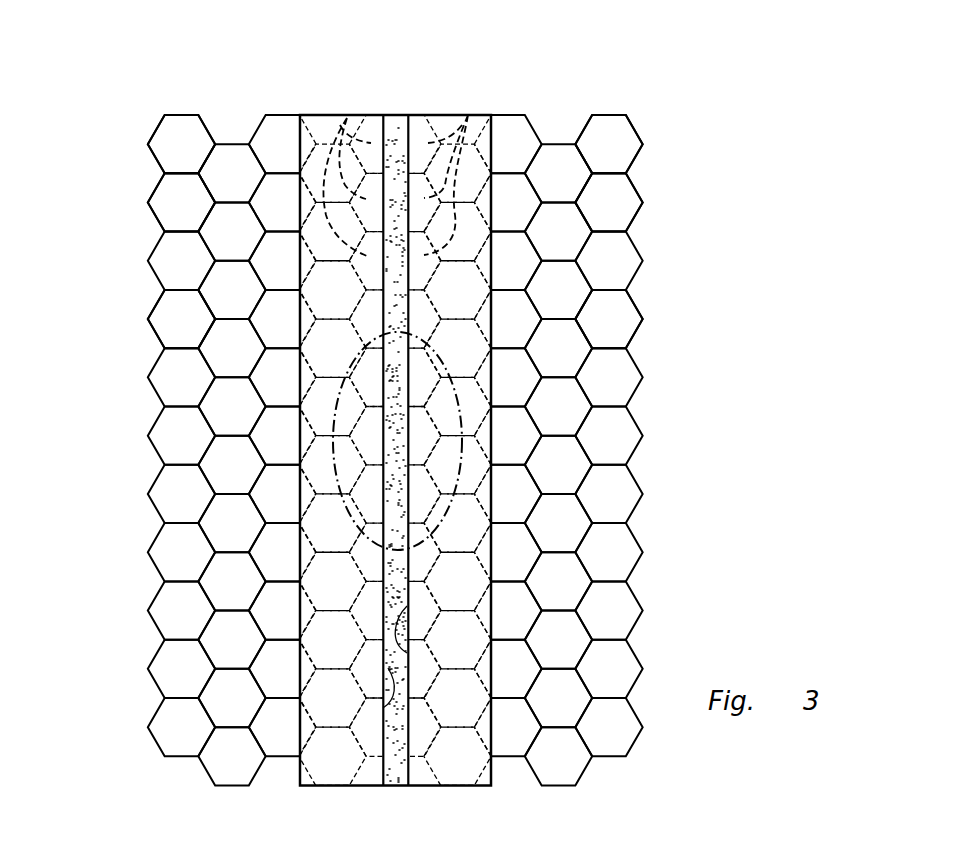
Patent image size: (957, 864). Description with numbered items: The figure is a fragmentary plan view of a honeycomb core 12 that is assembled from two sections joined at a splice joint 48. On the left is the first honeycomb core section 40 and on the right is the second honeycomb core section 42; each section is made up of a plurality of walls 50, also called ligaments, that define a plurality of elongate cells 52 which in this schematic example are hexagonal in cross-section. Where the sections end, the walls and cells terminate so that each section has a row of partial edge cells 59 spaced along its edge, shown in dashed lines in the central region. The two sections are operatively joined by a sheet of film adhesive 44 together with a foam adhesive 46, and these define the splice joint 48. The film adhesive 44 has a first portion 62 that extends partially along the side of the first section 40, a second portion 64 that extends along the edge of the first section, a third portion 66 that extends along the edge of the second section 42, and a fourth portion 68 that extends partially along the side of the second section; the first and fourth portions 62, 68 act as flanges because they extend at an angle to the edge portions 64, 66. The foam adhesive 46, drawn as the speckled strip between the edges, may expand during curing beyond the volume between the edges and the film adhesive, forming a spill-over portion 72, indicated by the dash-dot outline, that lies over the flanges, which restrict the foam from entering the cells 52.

The honeycomb core 12 is at (692, 57).
The first honeycomb core section 40 is at (245, 97).
The second honeycomb core section 42 is at (580, 78).
The sheet of film adhesive 44 is at (450, 113).
The foam adhesive 46 is at (400, 127).
The splice joint 48 is at (396, 792).
The walls 50 is at (153, 218).
The elongate cells 52 is at (173, 378).
The partial edge cells 59 is at (347, 118).
The first portion of the film adhesive 62 is at (330, 787).
The second portion of the film adhesive 64 is at (383, 708).
The third portion of the film adhesive 66 is at (407, 653).
The fourth portion of the film adhesive 68 is at (452, 787).
The spill-over portion 72 is at (462, 510).